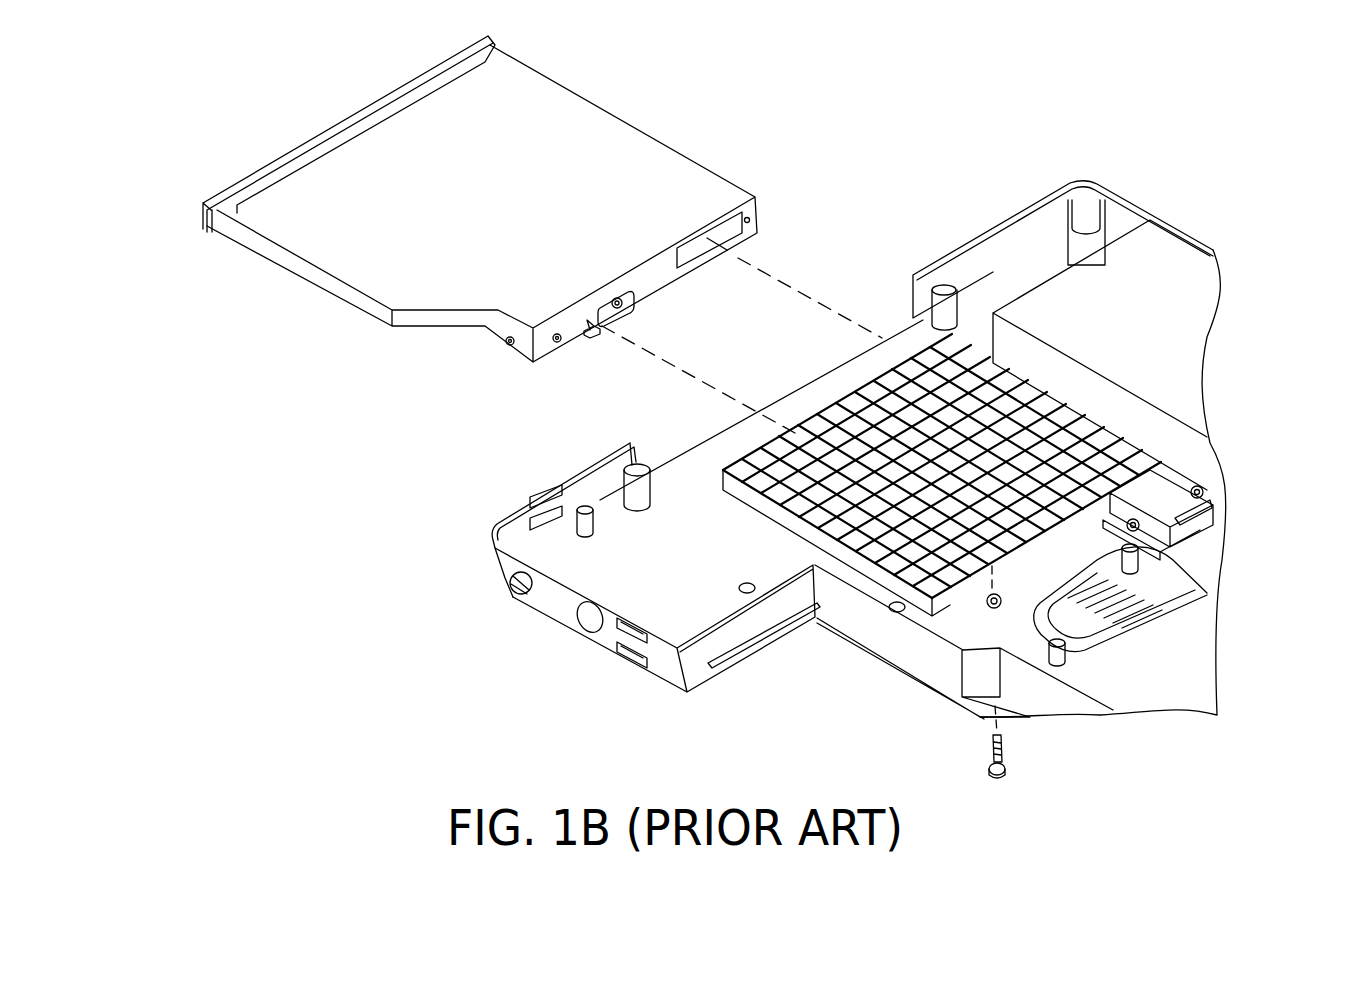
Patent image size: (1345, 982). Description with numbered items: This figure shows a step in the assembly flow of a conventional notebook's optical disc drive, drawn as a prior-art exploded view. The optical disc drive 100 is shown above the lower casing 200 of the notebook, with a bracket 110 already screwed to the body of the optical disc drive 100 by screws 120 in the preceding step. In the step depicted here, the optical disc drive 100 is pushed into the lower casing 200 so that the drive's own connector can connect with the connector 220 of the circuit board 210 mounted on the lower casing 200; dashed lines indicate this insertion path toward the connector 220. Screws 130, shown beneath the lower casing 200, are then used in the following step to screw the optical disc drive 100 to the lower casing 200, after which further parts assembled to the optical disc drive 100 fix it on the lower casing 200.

The optical disc drive 100 is at (632, 158).
The bracket 110 is at (622, 320).
The screws 120 is at (631, 300).
The screws 130 is at (1008, 760).
The lower casing 200 is at (888, 635).
The circuit board 210 is at (1143, 503).
The connector 220 is at (1210, 598).